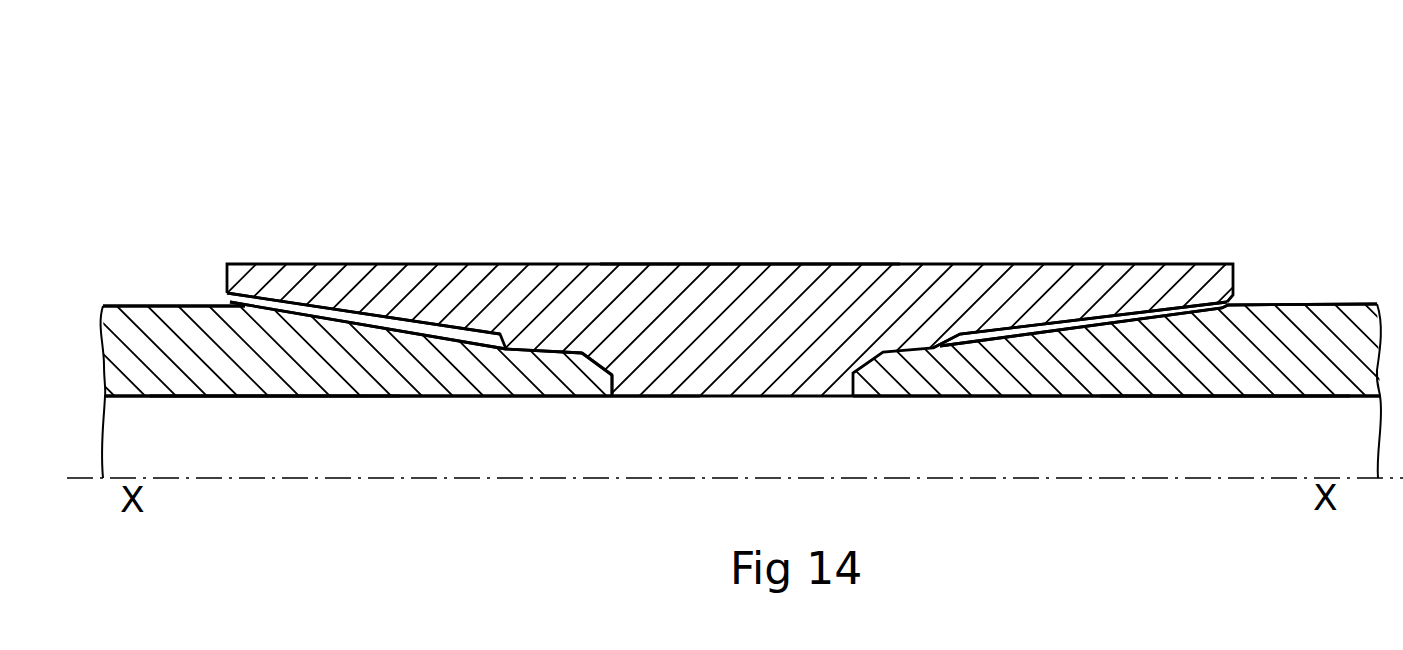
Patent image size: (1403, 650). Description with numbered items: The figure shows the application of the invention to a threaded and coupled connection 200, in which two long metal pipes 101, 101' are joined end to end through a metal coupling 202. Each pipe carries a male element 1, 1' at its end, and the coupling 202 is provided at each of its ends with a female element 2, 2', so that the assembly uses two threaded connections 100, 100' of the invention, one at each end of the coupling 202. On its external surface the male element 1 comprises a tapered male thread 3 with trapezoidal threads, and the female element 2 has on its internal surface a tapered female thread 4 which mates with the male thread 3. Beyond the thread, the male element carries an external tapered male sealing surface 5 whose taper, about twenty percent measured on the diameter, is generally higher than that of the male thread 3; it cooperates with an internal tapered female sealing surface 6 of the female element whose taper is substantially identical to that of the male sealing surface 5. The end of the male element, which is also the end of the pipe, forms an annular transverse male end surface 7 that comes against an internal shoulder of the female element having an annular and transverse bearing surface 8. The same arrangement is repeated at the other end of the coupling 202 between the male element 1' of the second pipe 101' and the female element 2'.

The threaded and coupled connection 200 is at (698, 127).
The threaded connection 100 is at (340, 226).
The threaded connection 100' is at (1131, 225).
The male element 1 is at (360, 390).
The male element 1' is at (1081, 391).
The female element 2 is at (735, 273).
The female element 2' is at (1080, 268).
The tapered male thread 3 is at (440, 322).
The tapered female thread 4 is at (472, 340).
The male sealing surface 5 is at (602, 373).
The female sealing surface 6 is at (590, 358).
The male end surface 7 is at (620, 377).
The bearing surface 8 is at (620, 378).
The long metal pipe 101 is at (275, 446).
The long metal pipe 101' is at (1225, 446).
The metal coupling 202 is at (690, 275).